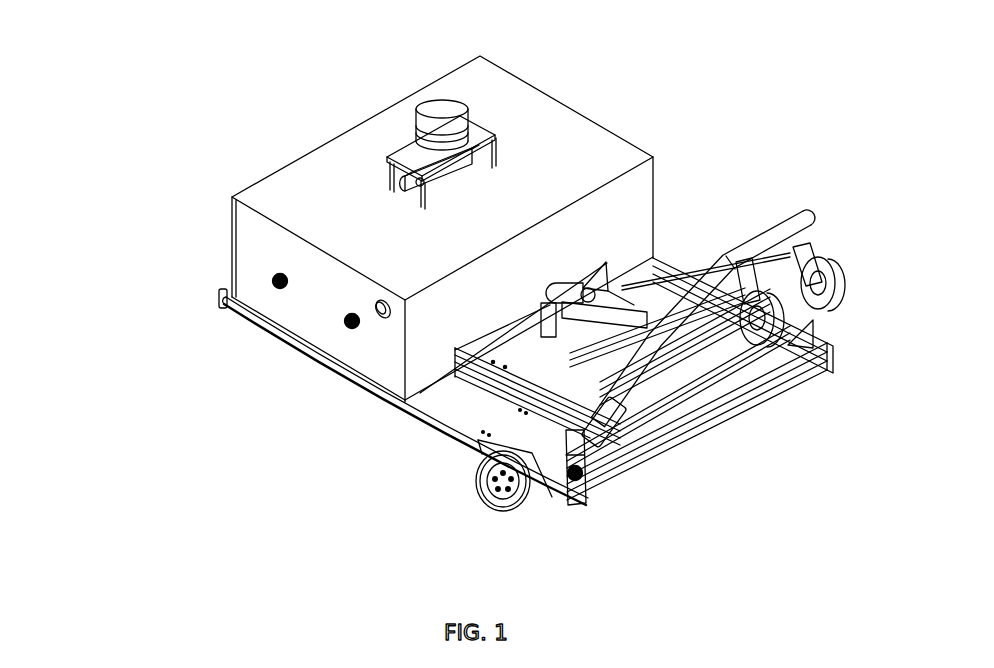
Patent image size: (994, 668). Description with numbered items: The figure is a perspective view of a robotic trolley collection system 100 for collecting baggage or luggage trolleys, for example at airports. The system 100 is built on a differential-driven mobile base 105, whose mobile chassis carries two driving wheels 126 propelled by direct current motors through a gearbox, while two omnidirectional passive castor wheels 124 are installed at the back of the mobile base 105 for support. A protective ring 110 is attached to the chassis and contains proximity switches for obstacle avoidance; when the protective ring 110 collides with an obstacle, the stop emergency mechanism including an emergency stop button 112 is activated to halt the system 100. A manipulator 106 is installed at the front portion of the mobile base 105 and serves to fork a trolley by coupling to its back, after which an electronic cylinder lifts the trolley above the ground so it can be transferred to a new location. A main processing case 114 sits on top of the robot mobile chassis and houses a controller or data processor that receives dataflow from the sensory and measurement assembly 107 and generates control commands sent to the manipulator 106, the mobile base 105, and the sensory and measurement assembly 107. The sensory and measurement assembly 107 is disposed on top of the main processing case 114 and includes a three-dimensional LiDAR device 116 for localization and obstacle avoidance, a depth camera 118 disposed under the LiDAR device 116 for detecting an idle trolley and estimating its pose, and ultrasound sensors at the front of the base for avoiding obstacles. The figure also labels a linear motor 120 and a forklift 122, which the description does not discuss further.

The robotic trolley collection system 100 is at (470, 289).
The differential-driven mobile base 105 is at (290, 347).
The manipulator 106 is at (725, 258).
The sensory and measurement assembly 107 is at (572, 470).
The protective ring 110 is at (226, 311).
The emergency stop button 112 is at (378, 302).
The main processing case 114 is at (362, 148).
The LiDAR device 116 is at (441, 116).
The depth camera 118 is at (470, 150).
The linear motor 120 is at (613, 282).
The forklift 122 is at (729, 291).
The passive castor wheels 124 is at (829, 312).
The driving wheels 126 is at (540, 505).